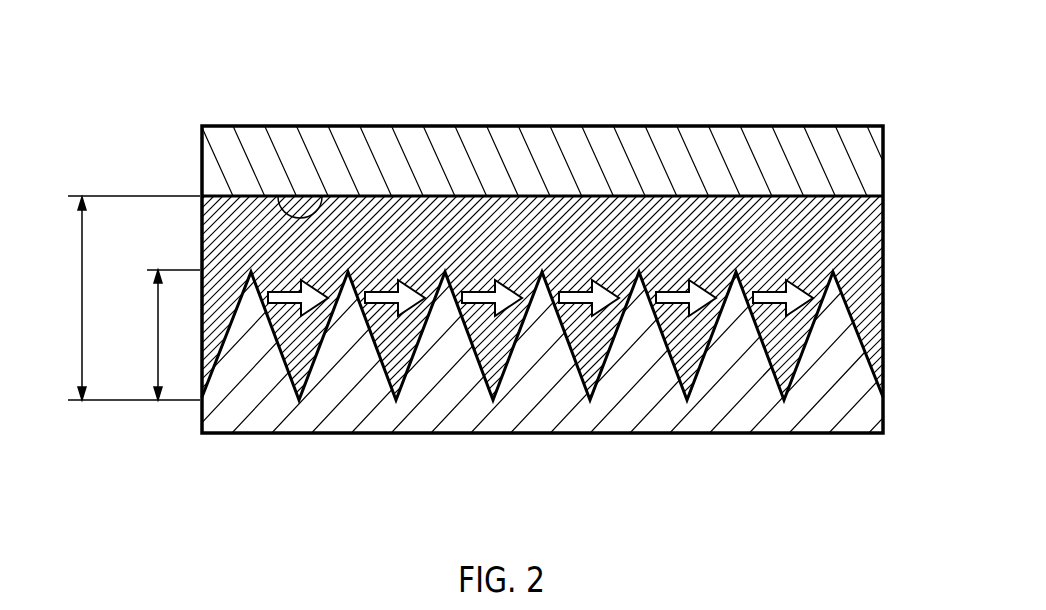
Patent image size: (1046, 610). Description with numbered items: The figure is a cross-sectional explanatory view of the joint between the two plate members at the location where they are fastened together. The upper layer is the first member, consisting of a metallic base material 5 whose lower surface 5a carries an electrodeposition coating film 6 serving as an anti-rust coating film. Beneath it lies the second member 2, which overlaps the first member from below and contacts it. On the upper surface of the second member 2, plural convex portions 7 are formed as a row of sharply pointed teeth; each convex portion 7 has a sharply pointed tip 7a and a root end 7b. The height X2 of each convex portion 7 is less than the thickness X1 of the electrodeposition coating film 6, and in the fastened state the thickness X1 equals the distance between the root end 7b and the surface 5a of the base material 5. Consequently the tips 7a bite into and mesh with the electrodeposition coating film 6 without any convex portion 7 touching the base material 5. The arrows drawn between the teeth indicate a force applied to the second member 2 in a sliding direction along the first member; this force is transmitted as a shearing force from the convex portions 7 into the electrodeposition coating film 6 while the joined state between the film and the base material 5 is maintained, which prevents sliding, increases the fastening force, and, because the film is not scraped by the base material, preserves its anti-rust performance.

The second member 2 is at (539, 396).
The base material 5 is at (862, 162).
The surface of the base material 5a is at (303, 141).
The electrodeposition coating film 6 is at (862, 245).
The convex portion 7 is at (542, 401).
The tip 7a is at (509, 178).
The root end 7b is at (562, 465).
The thickness of the electrodeposition coating film X1 is at (121, 298).
The height of the convex portion X2 is at (159, 335).